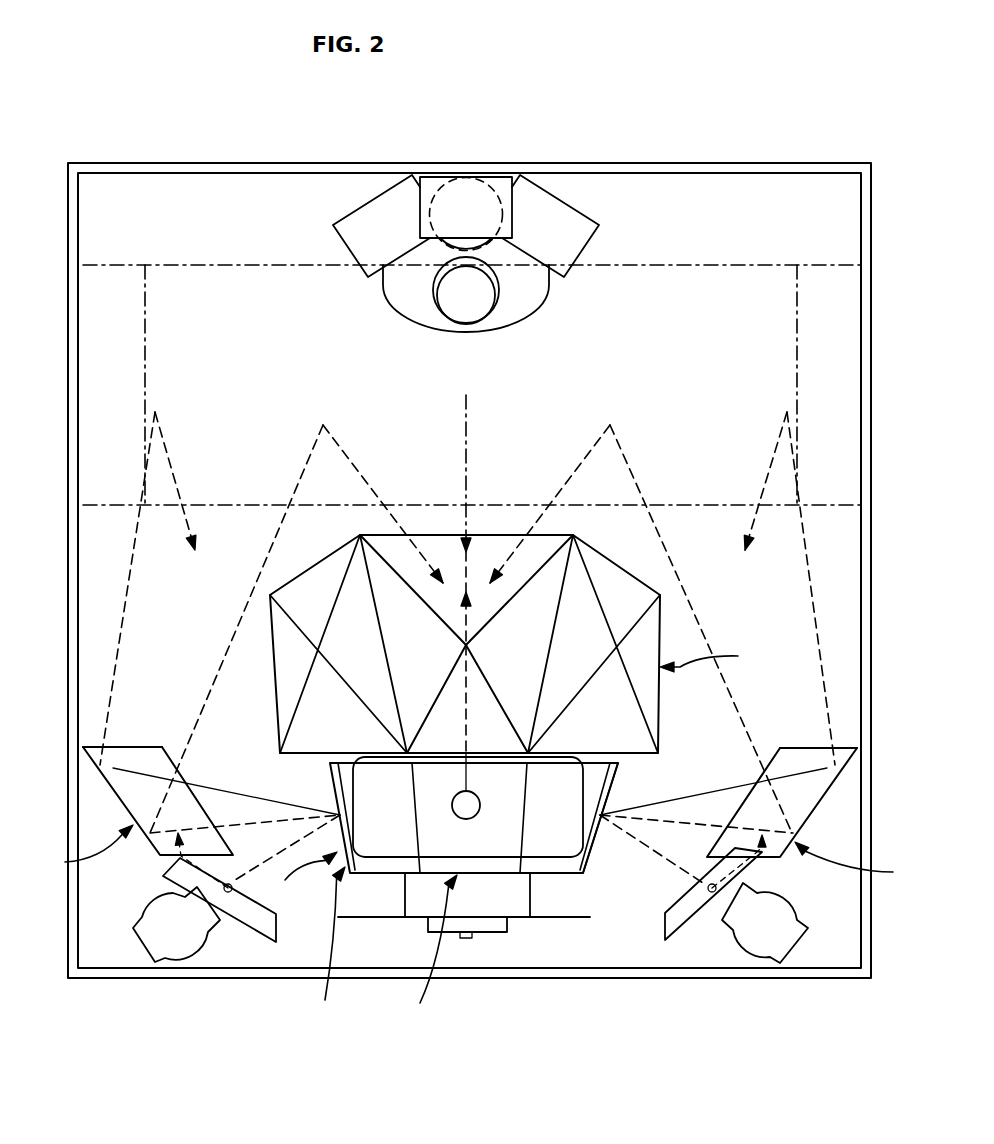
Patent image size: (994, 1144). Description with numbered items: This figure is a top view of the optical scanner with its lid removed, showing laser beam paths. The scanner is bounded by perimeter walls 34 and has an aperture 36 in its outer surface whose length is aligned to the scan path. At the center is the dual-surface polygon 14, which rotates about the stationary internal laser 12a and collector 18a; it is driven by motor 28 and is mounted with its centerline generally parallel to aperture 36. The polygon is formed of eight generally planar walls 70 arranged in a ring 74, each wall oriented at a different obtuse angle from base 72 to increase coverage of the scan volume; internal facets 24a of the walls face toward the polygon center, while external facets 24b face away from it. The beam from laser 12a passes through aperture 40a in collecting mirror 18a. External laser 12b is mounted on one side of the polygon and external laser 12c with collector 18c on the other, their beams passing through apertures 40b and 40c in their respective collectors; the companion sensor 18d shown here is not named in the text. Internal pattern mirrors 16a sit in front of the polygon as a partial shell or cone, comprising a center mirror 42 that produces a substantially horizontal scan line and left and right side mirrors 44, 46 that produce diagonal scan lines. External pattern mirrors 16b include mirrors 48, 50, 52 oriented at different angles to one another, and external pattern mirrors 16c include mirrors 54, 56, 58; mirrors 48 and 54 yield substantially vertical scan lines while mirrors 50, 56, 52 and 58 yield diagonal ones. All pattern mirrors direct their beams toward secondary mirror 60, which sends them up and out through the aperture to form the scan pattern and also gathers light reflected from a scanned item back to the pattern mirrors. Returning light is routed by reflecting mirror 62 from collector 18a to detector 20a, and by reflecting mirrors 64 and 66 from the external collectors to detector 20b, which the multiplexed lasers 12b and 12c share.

The internal laser 12a is at (452, 808).
The external laser 12b is at (167, 918).
The external laser 12c is at (780, 917).
The dual-surface polygon 14 is at (583, 865).
The internal pattern mirrors 16a is at (722, 658).
The external pattern mirrors 16b is at (75, 847).
The external pattern mirrors 16c is at (865, 862).
The collector 18a is at (540, 840).
The collector 18c is at (663, 927).
The sensor 18d is at (278, 930).
The detector 20a is at (468, 203).
The detector 20b is at (478, 302).
The internal facets 24a is at (598, 797).
The external facets 24b is at (620, 768).
The motor 28 is at (512, 905).
The perimeter walls 34 is at (218, 163).
The aperture 36 is at (215, 265).
The aperture 40a is at (480, 800).
The aperture 40b is at (228, 892).
The aperture 40c is at (712, 892).
The center mirror 42 is at (442, 545).
The left side mirror 44 is at (287, 672).
The right side mirror 46 is at (643, 700).
The mirror 48 is at (115, 795).
The mirror 50 is at (137, 747).
The mirror 52 is at (180, 777).
The mirror 54 is at (762, 780).
The mirror 56 is at (807, 748).
The mirror 58 is at (818, 803).
The secondary mirror 60 is at (78, 265).
The reflecting mirror 62 is at (435, 177).
The reflecting mirror 64 is at (372, 202).
The reflecting mirror 66 is at (545, 190).
The planar walls 70 is at (307, 876).
The base 72 is at (447, 945).
The ring 74 is at (330, 941).